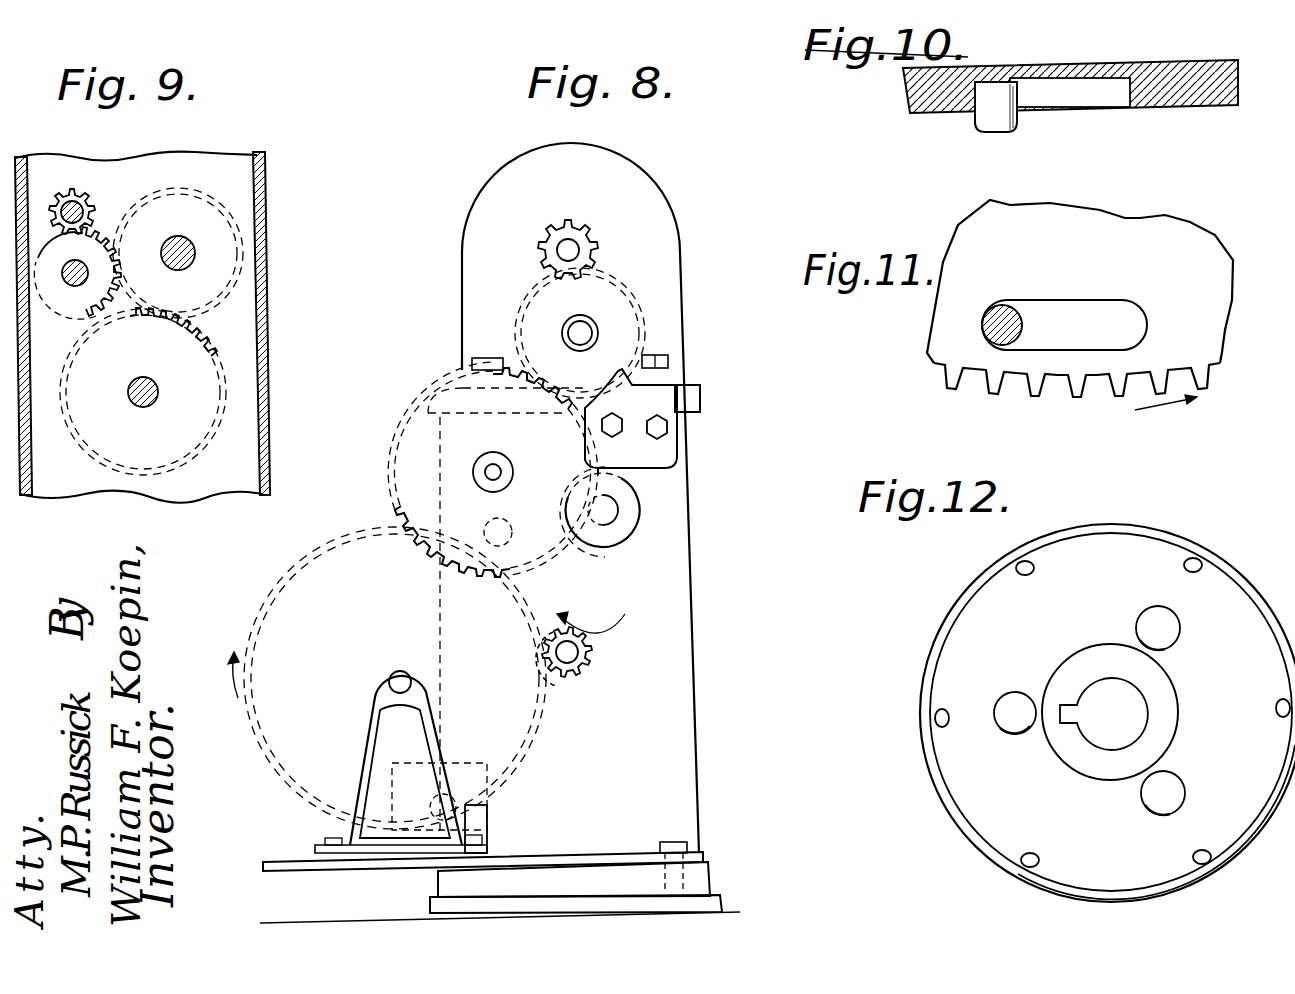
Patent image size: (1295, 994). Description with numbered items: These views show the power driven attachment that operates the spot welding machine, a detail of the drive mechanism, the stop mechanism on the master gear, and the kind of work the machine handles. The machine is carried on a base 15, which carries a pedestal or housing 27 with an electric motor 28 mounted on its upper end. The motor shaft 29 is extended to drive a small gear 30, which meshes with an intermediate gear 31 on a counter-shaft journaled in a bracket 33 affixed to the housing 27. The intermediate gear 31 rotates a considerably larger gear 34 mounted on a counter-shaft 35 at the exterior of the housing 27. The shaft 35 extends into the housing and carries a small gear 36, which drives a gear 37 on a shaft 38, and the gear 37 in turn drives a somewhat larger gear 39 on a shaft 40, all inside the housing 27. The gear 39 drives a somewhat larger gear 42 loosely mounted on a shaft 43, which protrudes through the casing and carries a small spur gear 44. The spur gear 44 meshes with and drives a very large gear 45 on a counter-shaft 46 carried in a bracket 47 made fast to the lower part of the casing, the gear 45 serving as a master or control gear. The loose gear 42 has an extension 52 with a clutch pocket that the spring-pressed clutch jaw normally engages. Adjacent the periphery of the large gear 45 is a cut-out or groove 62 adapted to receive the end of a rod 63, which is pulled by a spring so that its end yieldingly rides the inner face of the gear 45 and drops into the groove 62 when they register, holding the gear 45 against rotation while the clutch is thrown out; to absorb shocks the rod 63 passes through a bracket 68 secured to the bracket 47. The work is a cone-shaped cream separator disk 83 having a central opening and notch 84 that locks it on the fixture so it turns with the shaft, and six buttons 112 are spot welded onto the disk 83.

In FIG. 8, the base 15 is at (712, 905).
In FIG. 10, the base 15 is at (1207, 98).
In FIG. 11, the base 15 is at (1205, 367).
In FIG. 9, the pedestal or housing 27 is at (266, 400).
In FIG. 8, the pedestal or housing 27 is at (685, 563).
In FIG. 8, the electric motor 28 is at (522, 162).
In FIG. 8, the shaft 29 is at (578, 250).
In FIG. 8, the small gear 30 is at (575, 225).
In FIG. 8, the intermediate gear 31 is at (540, 290).
In FIG. 8, the bracket 33 is at (647, 393).
In FIG. 8, the larger gear 34 is at (517, 573).
In FIG. 9, the counter-shaft 35 is at (85, 193).
In FIG. 8, the counter-shaft 35 is at (500, 470).
In FIG. 9, the small gear 36 is at (58, 198).
In FIG. 9, the gear 37 is at (93, 232).
In FIG. 8, the gear 37 is at (492, 469).
In FIG. 9, the shaft 38 is at (80, 283).
In FIG. 8, the shaft 38 is at (504, 523).
In FIG. 9, the gear 39 is at (192, 307).
In FIG. 9, the shaft 40 is at (187, 243).
In FIG. 8, the shaft 40 is at (613, 505).
In FIG. 9, the gear 42 is at (205, 340).
In FIG. 9, the shaft 43 is at (155, 385).
In FIG. 8, the shaft 43 is at (575, 660).
In FIG. 8, the small spur gear 44 is at (609, 617).
In FIG. 8, the very large gear 45 is at (549, 690).
In FIG. 8, the counter-shaft 46 is at (395, 672).
In FIG. 8, the bracket 47 is at (370, 735).
In FIG. 8, the extension 52 is at (585, 328).
In FIG. 8, the cut-out or groove 62 is at (468, 772).
In FIG. 10, the cut-out or groove 62 is at (1100, 98).
In FIG. 11, the cut-out or groove 62 is at (1120, 306).
In FIG. 8, the rod 63 is at (470, 795).
In FIG. 10, the rod 63 is at (1015, 118).
In FIG. 11, the rod 63 is at (1020, 300).
In FIG. 8, the bracket 68 is at (487, 828).
In FIG. 12, the cream separator disk 83 is at (960, 625).
In FIG. 12, the central opening and notch 84 is at (1068, 705).
In FIG. 12, the buttons 112 is at (935, 718).